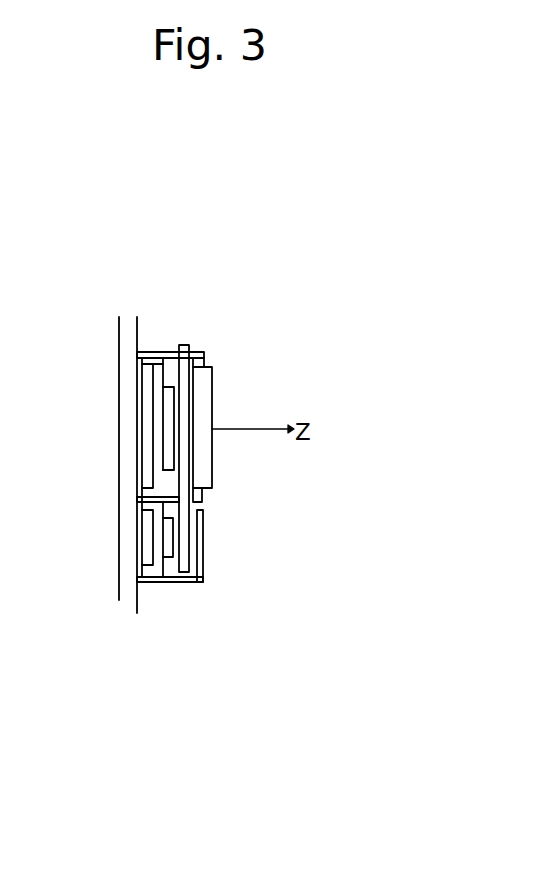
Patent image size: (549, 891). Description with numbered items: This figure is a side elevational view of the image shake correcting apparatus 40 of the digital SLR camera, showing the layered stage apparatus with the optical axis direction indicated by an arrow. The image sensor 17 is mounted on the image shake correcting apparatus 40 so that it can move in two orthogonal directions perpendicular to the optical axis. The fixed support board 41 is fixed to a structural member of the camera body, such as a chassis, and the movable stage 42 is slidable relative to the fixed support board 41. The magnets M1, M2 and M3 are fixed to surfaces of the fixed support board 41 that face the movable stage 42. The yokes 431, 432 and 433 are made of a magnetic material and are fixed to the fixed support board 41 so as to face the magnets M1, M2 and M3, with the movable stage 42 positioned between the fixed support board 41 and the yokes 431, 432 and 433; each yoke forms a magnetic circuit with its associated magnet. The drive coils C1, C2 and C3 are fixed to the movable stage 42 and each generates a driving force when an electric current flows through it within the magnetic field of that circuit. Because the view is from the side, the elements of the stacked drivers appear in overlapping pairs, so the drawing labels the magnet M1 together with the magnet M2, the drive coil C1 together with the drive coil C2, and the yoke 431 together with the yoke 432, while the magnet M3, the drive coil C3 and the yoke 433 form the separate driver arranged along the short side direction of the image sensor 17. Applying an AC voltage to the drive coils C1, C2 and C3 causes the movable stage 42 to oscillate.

The image sensor 17 is at (205, 383).
The image shake correcting apparatus 40 is at (318, 697).
The fixed support board 41 is at (119, 598).
The movable stage 42 is at (183, 562).
The yoke 431 is at (197, 580).
The yoke 432 is at (238, 606).
The yoke 433 is at (200, 352).
The magnet M1 is at (147, 567).
The magnet M2 is at (131, 606).
The magnet M3 is at (150, 352).
The drive coil C1 is at (165, 558).
The drive coil C2 is at (190, 610).
The drive coil C3 is at (167, 387).